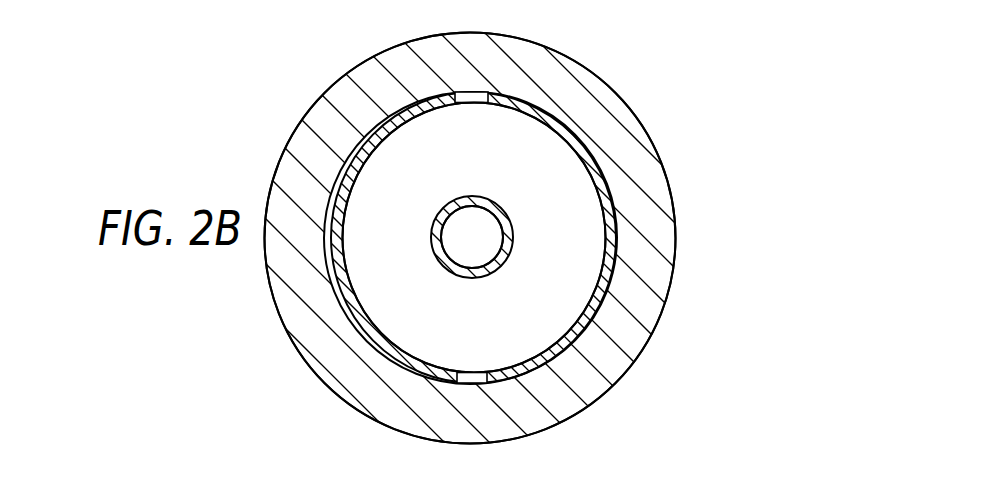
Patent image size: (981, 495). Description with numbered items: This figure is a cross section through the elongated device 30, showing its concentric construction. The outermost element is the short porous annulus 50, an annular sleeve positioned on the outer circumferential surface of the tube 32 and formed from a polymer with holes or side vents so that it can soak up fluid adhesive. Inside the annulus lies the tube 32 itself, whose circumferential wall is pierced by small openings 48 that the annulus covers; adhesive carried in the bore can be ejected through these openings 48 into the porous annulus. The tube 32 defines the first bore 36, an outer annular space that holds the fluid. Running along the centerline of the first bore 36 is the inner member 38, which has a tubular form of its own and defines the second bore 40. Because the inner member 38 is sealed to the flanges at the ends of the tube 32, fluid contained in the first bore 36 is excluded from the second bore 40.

The device 30 is at (760, 176).
The tube 32 is at (577, 147).
The first bore 36 is at (390, 275).
The inner member 38 is at (513, 237).
The second bore 40 is at (473, 243).
The openings 48 is at (470, 382).
The porous annulus 50 is at (585, 82).